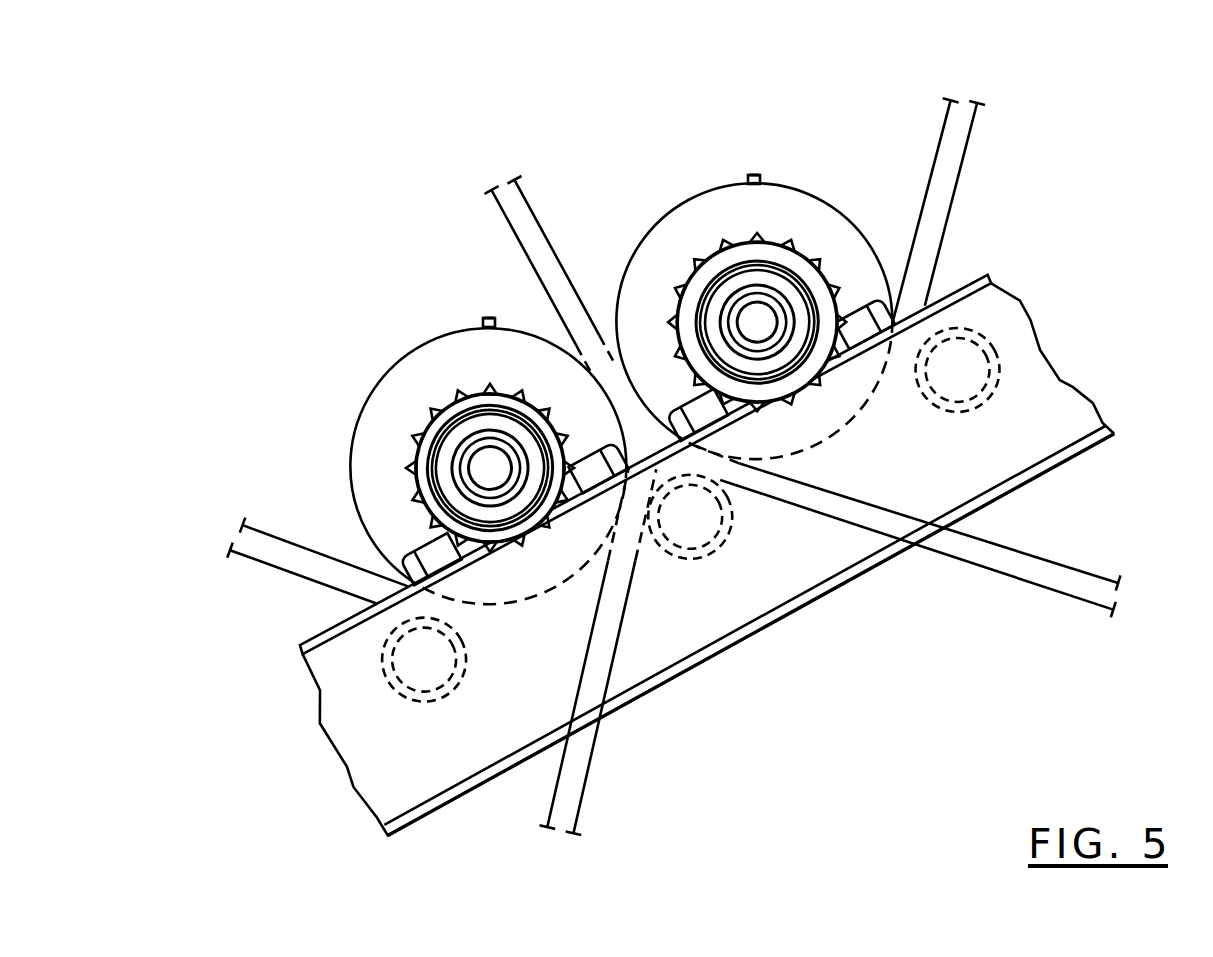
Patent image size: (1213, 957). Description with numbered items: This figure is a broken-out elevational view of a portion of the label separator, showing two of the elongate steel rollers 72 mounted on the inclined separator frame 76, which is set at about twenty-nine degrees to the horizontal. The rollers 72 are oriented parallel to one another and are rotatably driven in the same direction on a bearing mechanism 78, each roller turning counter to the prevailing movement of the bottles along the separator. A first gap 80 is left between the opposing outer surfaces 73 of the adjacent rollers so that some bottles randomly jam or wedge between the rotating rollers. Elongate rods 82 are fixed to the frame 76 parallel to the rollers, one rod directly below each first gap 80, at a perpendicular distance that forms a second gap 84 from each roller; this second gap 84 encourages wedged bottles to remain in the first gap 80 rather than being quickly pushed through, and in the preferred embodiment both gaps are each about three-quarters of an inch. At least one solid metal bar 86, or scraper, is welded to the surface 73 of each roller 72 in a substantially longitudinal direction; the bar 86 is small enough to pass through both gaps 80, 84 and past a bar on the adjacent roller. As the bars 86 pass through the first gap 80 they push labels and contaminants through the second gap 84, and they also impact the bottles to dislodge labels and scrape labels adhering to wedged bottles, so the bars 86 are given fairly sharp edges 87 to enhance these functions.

The roller 72 is at (603, 384).
The outer surface 73 is at (640, 247).
The separator frame 76 is at (1057, 403).
The bearing mechanism 78 is at (385, 452).
The first gap 80 is at (548, 163).
The elongate rod 82 is at (430, 699).
The second gap 84 is at (1008, 108).
The solid metal bar 86 is at (485, 318).
The sharp edge 87 is at (497, 305).